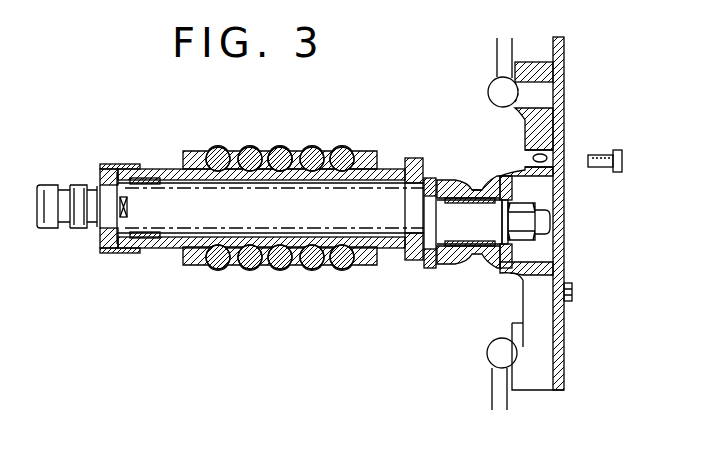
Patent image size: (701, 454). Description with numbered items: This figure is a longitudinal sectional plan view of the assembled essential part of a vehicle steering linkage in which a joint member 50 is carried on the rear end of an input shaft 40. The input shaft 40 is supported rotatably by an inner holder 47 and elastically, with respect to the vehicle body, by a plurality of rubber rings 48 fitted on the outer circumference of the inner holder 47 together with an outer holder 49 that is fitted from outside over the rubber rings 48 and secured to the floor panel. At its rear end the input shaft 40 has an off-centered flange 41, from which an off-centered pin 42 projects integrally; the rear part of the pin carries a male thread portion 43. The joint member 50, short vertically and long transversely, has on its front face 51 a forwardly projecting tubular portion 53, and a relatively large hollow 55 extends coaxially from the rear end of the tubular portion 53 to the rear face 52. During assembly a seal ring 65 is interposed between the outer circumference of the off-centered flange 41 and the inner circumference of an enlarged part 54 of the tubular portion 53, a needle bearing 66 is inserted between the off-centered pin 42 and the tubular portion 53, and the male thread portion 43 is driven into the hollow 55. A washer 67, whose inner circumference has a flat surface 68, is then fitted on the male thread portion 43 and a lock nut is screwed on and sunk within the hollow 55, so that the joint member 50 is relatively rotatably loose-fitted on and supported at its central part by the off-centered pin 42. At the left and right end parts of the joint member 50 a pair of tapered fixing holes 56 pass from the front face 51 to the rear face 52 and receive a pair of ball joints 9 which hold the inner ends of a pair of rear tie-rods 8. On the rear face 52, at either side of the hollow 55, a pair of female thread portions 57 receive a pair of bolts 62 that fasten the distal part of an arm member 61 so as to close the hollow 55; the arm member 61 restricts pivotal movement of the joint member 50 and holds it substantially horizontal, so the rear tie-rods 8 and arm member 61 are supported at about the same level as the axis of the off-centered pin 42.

The rear tie-rod 8 is at (497, 46).
The ball joint 9 is at (490, 92).
The input shaft 40 is at (193, 210).
The off-centered flange 41 is at (415, 258).
The off-centered pin 42 is at (468, 210).
The male thread portion 43 is at (560, 220).
The inner holder 47 is at (186, 166).
The rubber rings 48 is at (335, 269).
The outer holder 49 is at (266, 147).
The joint member 50 is at (537, 312).
The front face 51 is at (513, 323).
The rear face 52 is at (558, 372).
The tubular portion 53 is at (462, 266).
The enlarged part 54 is at (429, 178).
The hollow 55 is at (560, 264).
The tapered fixing hole 56 is at (532, 62).
The female thread portion 57 is at (558, 152).
The arm member 61 is at (565, 120).
The bolt 62 is at (622, 164).
The seal ring 65 is at (429, 268).
The needle bearing 66 is at (482, 190).
The washer 67 is at (551, 207).
The flat surface 68 is at (512, 238).